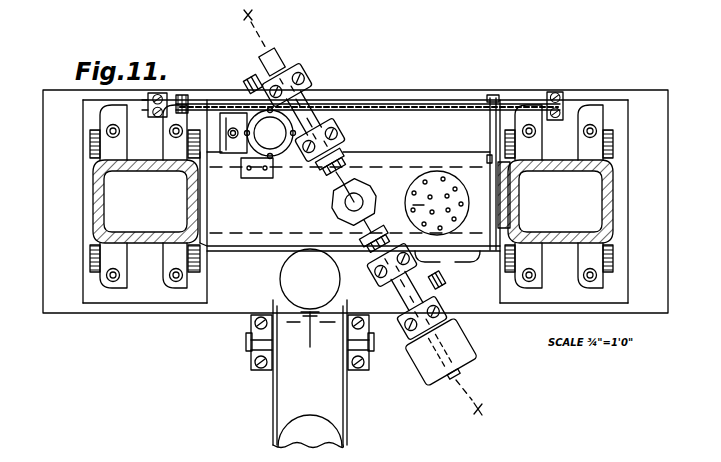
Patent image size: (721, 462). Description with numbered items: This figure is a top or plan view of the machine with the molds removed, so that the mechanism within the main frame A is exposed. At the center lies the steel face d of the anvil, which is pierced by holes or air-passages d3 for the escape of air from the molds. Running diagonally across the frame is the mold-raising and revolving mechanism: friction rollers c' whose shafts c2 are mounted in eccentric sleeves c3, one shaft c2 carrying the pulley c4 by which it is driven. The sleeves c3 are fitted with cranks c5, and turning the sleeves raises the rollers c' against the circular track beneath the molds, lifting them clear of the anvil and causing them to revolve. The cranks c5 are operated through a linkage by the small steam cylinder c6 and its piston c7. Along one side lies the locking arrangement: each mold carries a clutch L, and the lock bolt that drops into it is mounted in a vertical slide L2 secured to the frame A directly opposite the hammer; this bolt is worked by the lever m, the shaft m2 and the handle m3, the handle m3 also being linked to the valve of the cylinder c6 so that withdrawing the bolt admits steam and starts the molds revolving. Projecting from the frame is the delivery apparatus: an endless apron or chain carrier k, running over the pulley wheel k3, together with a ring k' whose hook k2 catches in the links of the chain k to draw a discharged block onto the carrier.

The main frame A is at (355, 201).
The lever m is at (490, 132).
The shaft m2 is at (200, 105).
The handle m3 is at (182, 100).
The shaft c2 is at (281, 60).
The eccentric sleeve c3 is at (323, 117).
The pulley c4 is at (443, 366).
The crank c5 is at (262, 81).
The steam cylinder c6 is at (268, 143).
The piston c7 is at (233, 134).
The friction roller c' is at (353, 201).
The anvil face d is at (437, 203).
The air passage d3 is at (413, 206).
The clutch L is at (500, 212).
The vertical slide L2 is at (500, 228).
The endless apron k is at (310, 374).
The ring k' is at (310, 348).
The hook k2 is at (312, 330).
The pulley wheel k3 is at (271, 368).